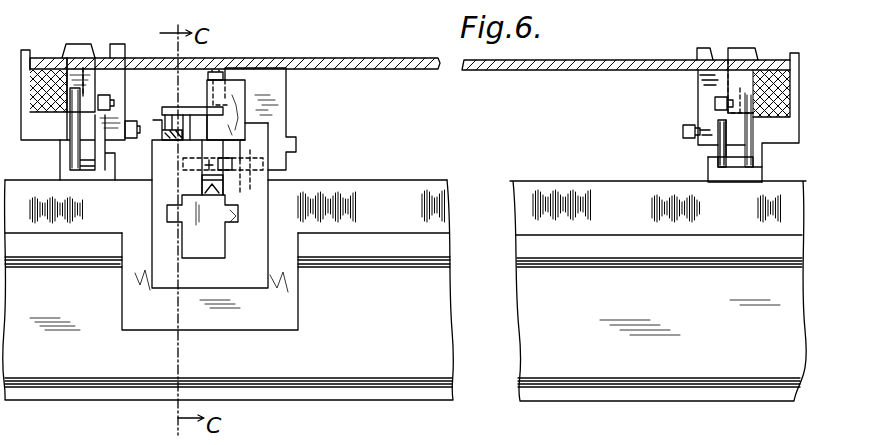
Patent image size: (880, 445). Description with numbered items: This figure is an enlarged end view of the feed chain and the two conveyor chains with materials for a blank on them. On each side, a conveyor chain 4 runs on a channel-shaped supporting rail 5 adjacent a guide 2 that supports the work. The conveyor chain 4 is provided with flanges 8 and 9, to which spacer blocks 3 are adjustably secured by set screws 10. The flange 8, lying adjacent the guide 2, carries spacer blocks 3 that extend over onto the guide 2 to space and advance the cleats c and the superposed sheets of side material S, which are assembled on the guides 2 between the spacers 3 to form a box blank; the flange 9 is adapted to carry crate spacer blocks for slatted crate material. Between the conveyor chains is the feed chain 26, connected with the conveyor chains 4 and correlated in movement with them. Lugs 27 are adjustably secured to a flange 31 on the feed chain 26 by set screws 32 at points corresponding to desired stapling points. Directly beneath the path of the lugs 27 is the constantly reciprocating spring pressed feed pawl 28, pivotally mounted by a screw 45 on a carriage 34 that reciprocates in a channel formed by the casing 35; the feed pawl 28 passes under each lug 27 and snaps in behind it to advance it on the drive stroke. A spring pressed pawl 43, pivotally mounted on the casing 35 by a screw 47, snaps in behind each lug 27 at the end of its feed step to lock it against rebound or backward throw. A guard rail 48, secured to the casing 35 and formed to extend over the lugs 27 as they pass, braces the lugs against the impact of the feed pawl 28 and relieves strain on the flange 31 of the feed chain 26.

The side material S is at (369, 62).
The spacer block 3 is at (78, 52).
The cleat c is at (43, 67).
The flange 8 is at (78, 122).
The flange 9 is at (97, 128).
The feed chain 26 is at (175, 130).
The feed pawl 28 is at (215, 145).
The flange 31 is at (200, 108).
The set screw 32 is at (220, 72).
The lug 27 is at (231, 95).
The guard rail 48 is at (276, 107).
The pawl 43 is at (233, 147).
The screw 47 is at (268, 178).
The screw 45 is at (204, 190).
The carriage 34 is at (202, 199).
The casing 35 is at (210, 281).
The guide 2 is at (783, 123).
The set screw 10 is at (714, 100).
The conveyor chain 4 is at (728, 157).
The supporting rail 5 is at (713, 180).